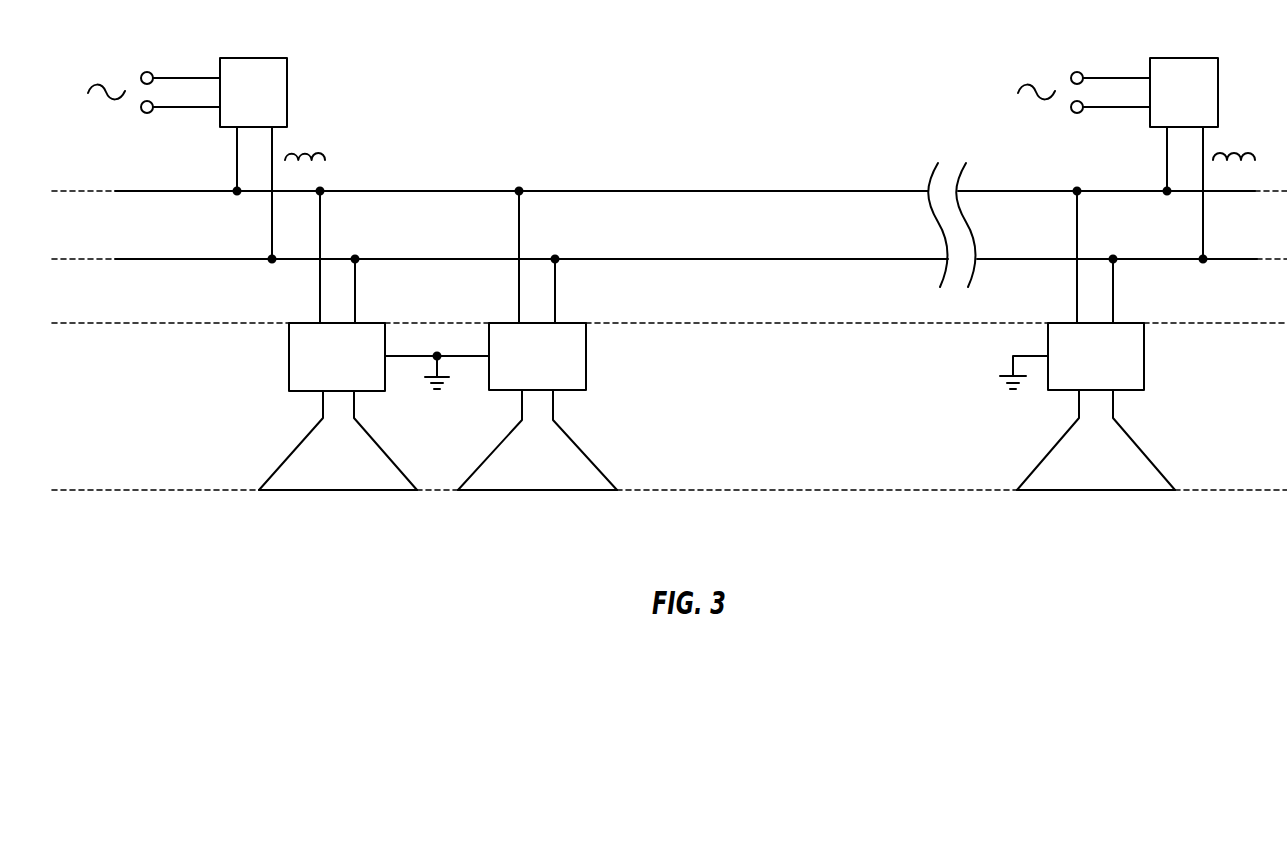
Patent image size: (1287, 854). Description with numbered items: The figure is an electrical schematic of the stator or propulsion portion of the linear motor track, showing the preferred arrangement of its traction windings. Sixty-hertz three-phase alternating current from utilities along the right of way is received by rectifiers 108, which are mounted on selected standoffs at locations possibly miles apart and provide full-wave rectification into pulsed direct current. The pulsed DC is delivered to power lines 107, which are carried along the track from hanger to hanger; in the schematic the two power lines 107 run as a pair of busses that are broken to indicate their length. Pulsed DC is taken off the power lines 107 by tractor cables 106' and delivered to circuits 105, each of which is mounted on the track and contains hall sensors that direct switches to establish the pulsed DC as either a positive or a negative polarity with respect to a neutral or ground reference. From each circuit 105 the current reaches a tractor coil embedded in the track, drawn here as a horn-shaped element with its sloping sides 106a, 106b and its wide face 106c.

The circuits 105 is at (315, 351).
The tractor cables 106' is at (718, 256).
The horn first side wall 106a is at (284, 458).
The horn second side wall 106b is at (588, 453).
The horn radiating face 106c is at (336, 492).
The power lines 107 is at (702, 190).
The rectifiers 108 is at (253, 58).